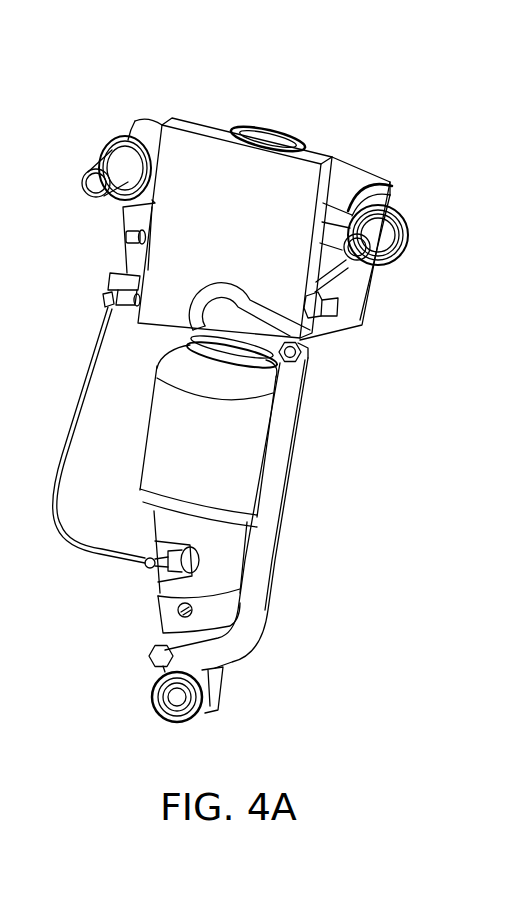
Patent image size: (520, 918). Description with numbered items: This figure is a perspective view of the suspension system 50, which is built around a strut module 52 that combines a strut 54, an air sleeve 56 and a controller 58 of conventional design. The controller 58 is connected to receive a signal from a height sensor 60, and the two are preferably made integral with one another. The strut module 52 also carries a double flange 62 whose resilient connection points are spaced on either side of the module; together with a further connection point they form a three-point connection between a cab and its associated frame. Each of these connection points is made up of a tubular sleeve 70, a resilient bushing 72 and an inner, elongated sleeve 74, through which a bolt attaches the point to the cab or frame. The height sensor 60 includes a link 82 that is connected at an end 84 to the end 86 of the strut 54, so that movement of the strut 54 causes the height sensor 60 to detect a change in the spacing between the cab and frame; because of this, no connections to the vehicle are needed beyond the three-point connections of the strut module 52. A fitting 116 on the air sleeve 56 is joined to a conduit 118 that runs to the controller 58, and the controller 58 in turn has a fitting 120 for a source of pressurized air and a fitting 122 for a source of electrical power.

The suspension system 50 is at (312, 106).
The strut module 52 is at (368, 317).
The strut 54 is at (165, 603).
The air sleeve 56 is at (215, 454).
The controller 58 is at (300, 204).
The height sensor 60 is at (253, 321).
The double flange 62 is at (365, 176).
The tubular sleeve 70 is at (131, 134).
The resilient bushing 72 is at (103, 158).
The inner, elongated sleeve 74 is at (92, 190).
The link 82 is at (288, 445).
The end 84 is at (150, 655).
The end 86 is at (212, 672).
The fitting 116 is at (158, 544).
The conduit 118 is at (62, 463).
The fitting 120 is at (125, 240).
The fitting 122 is at (340, 316).